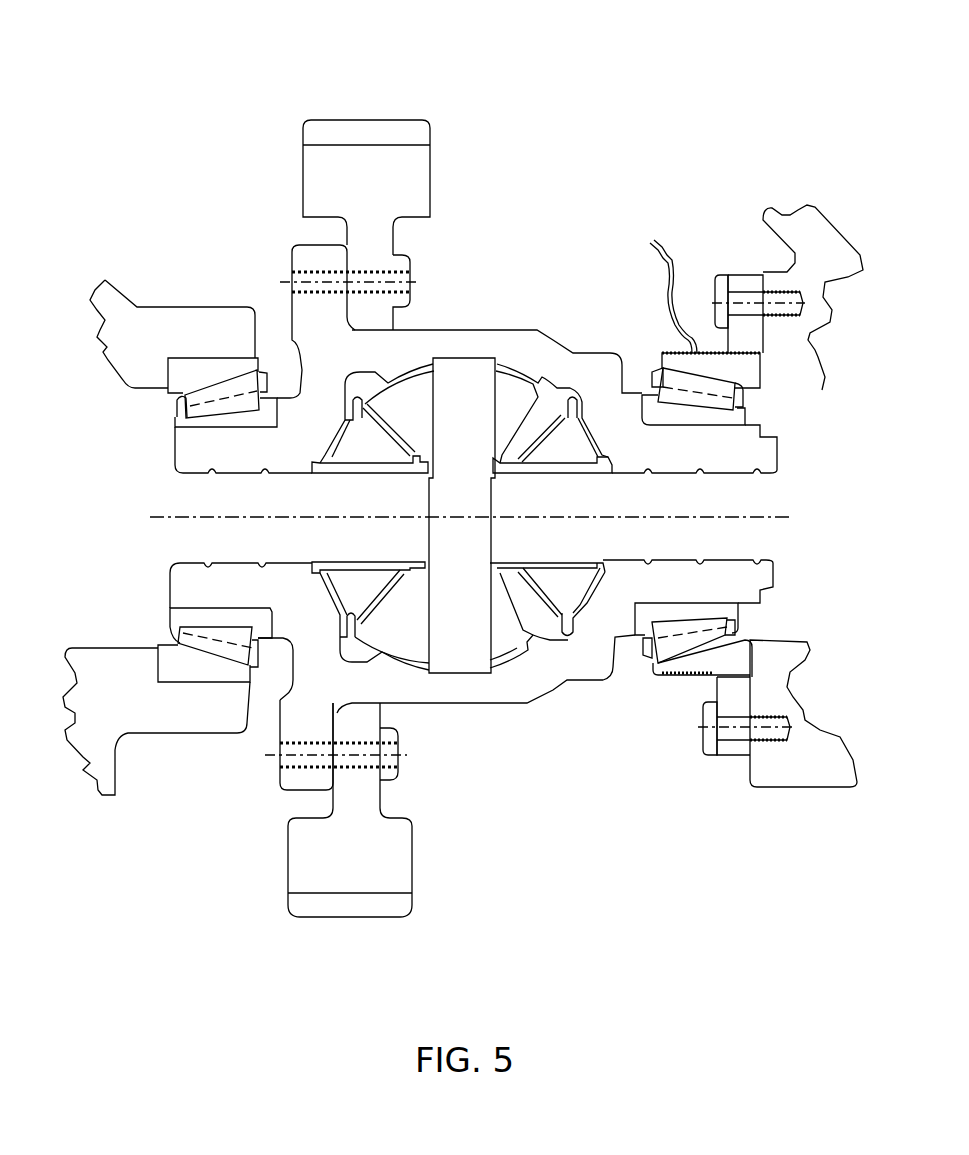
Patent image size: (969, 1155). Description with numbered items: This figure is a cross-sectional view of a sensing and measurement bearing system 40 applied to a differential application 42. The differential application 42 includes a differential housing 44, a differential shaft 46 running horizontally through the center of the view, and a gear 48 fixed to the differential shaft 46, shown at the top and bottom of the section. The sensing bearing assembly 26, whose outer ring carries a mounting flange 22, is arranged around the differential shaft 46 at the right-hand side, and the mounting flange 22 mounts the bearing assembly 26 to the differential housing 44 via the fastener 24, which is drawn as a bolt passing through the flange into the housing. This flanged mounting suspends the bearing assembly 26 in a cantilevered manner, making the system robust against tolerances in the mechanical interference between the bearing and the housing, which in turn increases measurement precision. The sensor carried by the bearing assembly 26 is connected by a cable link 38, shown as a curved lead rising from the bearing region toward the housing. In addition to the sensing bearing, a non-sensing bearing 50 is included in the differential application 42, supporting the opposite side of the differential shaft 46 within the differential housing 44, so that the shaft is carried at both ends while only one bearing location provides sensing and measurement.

The mounting flange 22 is at (718, 755).
The fastener 24 is at (705, 716).
The bearing assembly 26 is at (638, 325).
The cable link 38 is at (650, 240).
The sensing and measurement bearing system 40 is at (706, 250).
The differential application 42 is at (205, 105).
The differential housing 44 is at (804, 215).
The differential shaft 46 is at (748, 450).
The gear 48 is at (411, 127).
The non-sensing bearing 50 is at (153, 422).